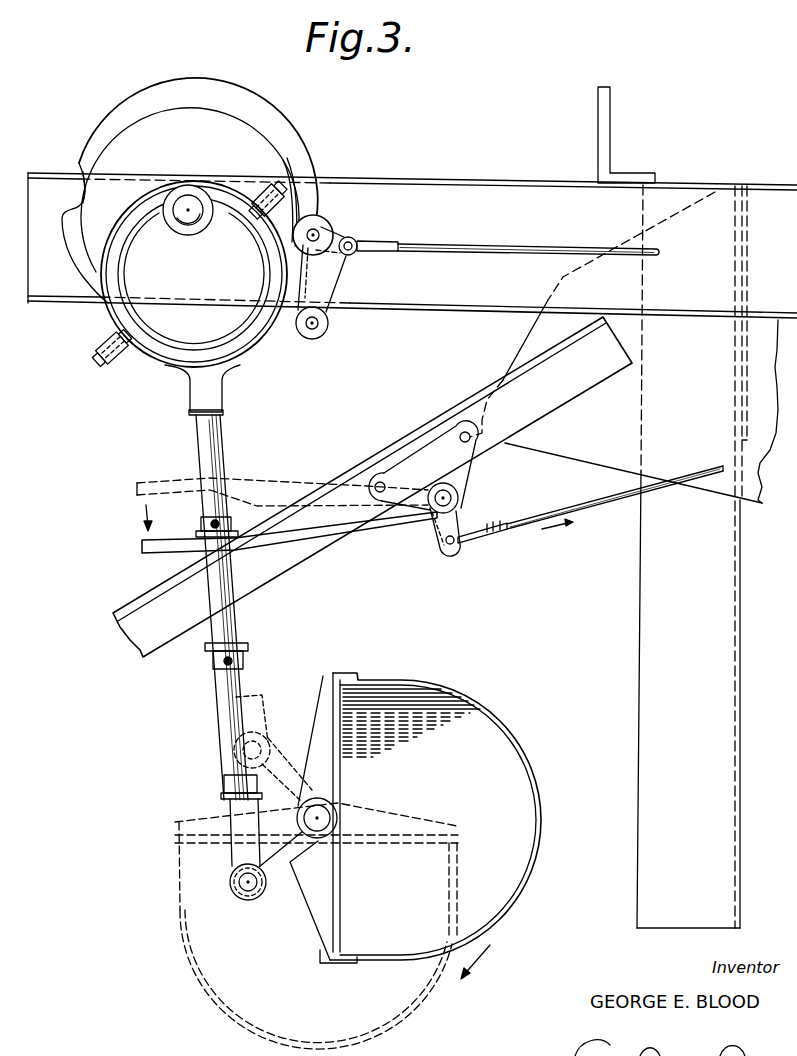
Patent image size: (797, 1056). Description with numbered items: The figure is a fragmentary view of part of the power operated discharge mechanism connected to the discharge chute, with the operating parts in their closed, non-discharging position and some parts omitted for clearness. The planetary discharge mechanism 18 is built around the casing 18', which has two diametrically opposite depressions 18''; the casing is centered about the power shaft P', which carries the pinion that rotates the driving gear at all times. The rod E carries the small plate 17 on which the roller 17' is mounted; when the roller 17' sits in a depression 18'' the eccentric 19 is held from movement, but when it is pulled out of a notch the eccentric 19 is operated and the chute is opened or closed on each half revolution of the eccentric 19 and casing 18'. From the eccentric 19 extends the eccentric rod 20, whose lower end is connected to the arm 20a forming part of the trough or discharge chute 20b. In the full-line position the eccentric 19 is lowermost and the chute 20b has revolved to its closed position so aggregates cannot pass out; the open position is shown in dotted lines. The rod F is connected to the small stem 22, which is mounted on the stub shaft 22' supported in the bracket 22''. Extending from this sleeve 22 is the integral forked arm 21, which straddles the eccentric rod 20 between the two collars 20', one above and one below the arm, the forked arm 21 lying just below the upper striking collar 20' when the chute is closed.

The small plate 17 is at (346, 283).
The roller 17' is at (343, 228).
The planetary discharge mechanism 18 is at (190, 187).
The casing 18' is at (320, 185).
The depression 18'' is at (201, 210).
The eccentric 19 is at (173, 332).
The power shaft P' is at (181, 231).
The rod E is at (480, 251).
The rod F is at (616, 508).
The eccentric rod 20 is at (245, 657).
The collar 20' is at (250, 627).
The arm 20a is at (285, 770).
The discharge chute 20b is at (383, 685).
The forked arm 21 is at (296, 497).
The small stem 22 is at (473, 522).
The stub shaft 22' is at (482, 487).
The bracket 22'' is at (423, 458).